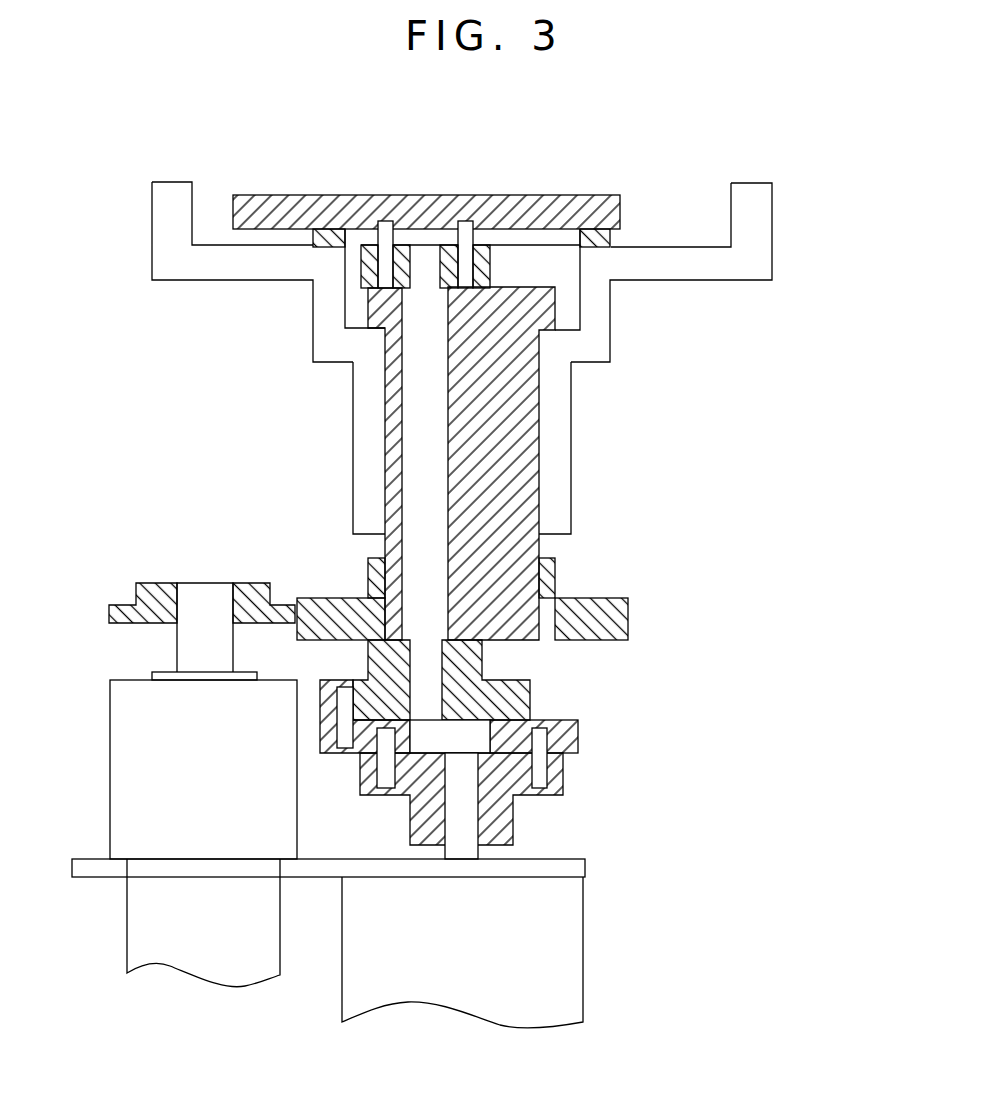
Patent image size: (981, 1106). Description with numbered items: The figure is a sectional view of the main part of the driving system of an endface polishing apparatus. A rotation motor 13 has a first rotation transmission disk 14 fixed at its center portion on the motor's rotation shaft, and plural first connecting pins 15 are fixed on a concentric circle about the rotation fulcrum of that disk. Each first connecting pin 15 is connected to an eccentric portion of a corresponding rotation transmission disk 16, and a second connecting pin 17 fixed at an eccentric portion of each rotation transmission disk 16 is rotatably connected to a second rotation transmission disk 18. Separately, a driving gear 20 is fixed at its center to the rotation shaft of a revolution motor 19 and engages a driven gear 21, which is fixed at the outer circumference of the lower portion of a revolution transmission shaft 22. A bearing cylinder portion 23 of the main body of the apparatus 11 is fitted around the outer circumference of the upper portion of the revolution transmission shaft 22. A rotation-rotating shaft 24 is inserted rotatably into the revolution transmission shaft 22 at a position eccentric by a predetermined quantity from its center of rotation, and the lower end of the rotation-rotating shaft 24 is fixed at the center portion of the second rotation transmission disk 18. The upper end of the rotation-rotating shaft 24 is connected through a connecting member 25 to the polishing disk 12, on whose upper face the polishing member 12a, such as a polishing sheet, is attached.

The main body of the apparatus 11 is at (642, 268).
The polishing disk 12 is at (610, 212).
The polishing member 12a is at (592, 195).
The rotation motor 13 is at (443, 960).
The first rotation transmission disk 14 is at (497, 817).
The first connecting pins 15 is at (540, 765).
The rotation transmission disks 16 is at (563, 730).
The second connecting pin 17 is at (345, 733).
The second rotation transmission disk 18 is at (525, 690).
The revolution motor 19 is at (152, 777).
The driving gear 20 is at (150, 595).
The driven gear 21 is at (612, 598).
The revolution transmission shaft 22 is at (505, 542).
The bearing cylinder portion 23 is at (560, 452).
The rotation-rotating shaft 24 is at (415, 470).
The connecting member 25 is at (388, 267).